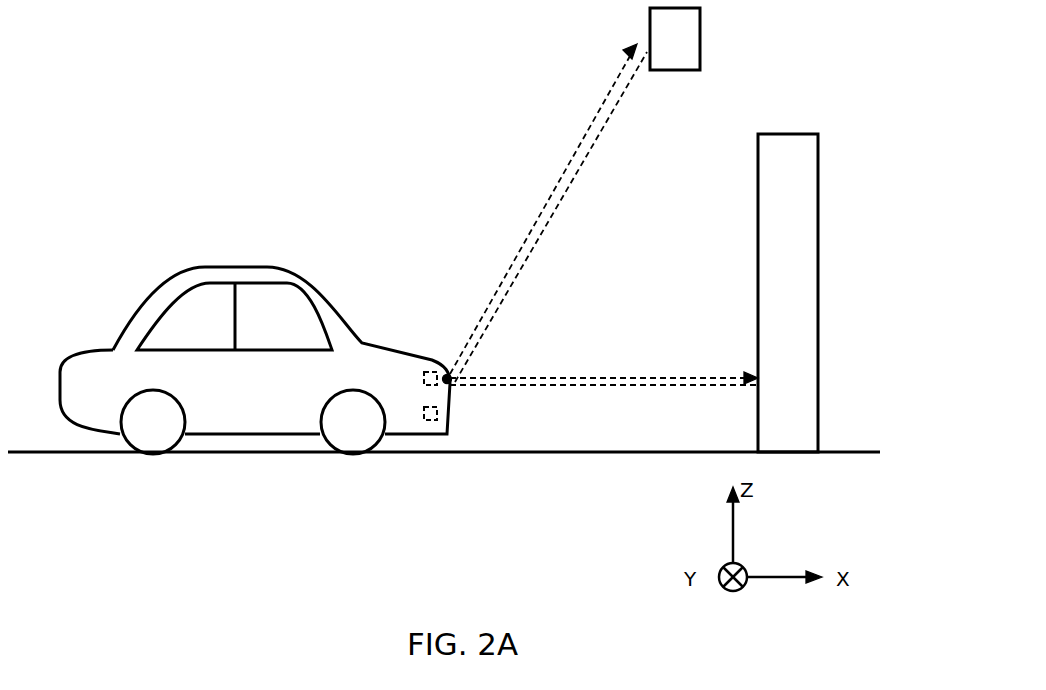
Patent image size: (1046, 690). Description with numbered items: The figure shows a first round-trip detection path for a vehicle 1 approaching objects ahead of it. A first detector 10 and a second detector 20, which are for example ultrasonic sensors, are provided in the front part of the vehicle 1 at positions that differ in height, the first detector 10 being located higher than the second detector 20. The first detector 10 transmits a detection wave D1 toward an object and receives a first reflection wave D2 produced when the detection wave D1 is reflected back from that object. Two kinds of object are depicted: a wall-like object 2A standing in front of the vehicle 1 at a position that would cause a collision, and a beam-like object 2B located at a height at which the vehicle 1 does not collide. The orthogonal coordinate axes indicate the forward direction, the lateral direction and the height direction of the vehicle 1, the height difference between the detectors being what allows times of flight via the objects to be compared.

The vehicle 1 is at (116, 268).
The first detector 10 is at (432, 372).
The second detector 20 is at (425, 407).
The object 2A is at (818, 168).
The object 2B is at (700, 30).
The detection wave D1 is at (532, 218).
The first reflection wave D2 is at (538, 230).